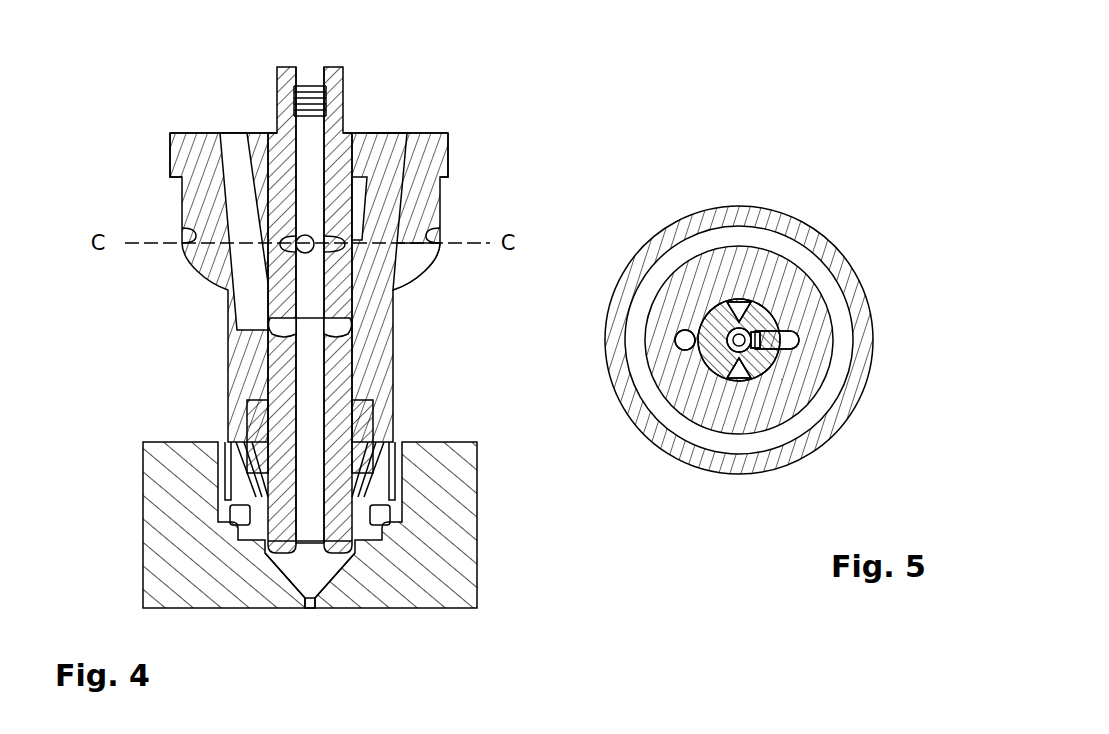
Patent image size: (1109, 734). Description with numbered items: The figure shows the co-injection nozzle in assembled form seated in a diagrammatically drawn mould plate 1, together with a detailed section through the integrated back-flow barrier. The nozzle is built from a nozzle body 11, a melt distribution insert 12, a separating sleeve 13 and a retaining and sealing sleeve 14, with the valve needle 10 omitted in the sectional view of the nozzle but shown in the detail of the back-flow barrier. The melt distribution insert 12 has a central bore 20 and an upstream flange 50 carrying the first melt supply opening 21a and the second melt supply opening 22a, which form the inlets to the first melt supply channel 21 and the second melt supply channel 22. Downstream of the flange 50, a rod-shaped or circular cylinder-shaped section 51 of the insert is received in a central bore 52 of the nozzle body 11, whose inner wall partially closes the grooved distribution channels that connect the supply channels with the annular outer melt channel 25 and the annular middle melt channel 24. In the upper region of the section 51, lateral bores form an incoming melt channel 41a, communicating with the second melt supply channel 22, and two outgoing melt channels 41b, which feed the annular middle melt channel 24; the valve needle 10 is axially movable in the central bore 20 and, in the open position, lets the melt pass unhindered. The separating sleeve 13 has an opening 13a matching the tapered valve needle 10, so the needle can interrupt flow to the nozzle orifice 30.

In FIG. 4, the mould plate 1 is at (167, 562).
In FIG. 5, the valve needle 10 is at (735, 372).
In FIG. 4, the nozzle body 11 is at (433, 153).
In FIG. 5, the nozzle body 11 is at (783, 222).
In FIG. 4, the melt distribution insert 12 is at (337, 103).
In FIG. 5, the melt distribution insert 12 is at (735, 353).
In FIG. 4, the separating sleeve 13 is at (363, 553).
In FIG. 4, the opening 13a is at (317, 567).
In FIG. 4, the retaining and sealing sleeve 14 is at (380, 517).
In FIG. 4, the central bore 20 is at (307, 147).
In FIG. 5, the central bore 20 is at (728, 343).
In FIG. 4, the first melt supply channel 21 is at (228, 152).
In FIG. 5, the first melt supply channel 21 is at (685, 330).
In FIG. 4, the first melt supply opening 21a is at (223, 133).
In FIG. 4, the second melt supply channel 22 is at (407, 137).
In FIG. 5, the second melt supply channel 22 is at (793, 338).
In FIG. 4, the second melt supply opening 22a is at (380, 157).
In FIG. 4, the annular middle melt channel 24 is at (232, 493).
In FIG. 4, the annular outer melt channel 25 is at (267, 525).
In FIG. 4, the nozzle orifice 30 is at (312, 600).
In FIG. 4, the incoming melt channel 41a is at (347, 242).
In FIG. 5, the incoming melt channel 41a is at (774, 326).
In FIG. 4, the outgoing melt channel 41b is at (302, 245).
In FIG. 5, the outgoing melt channel 41b is at (730, 298).
In FIG. 4, the upstream flange 50 is at (228, 152).
In FIG. 4, the rod-shaped or circular cylinder-shaped section 51 is at (340, 380).
In FIG. 4, the central bore 52 is at (267, 203).
In FIG. 5, the central bore 52 is at (768, 347).